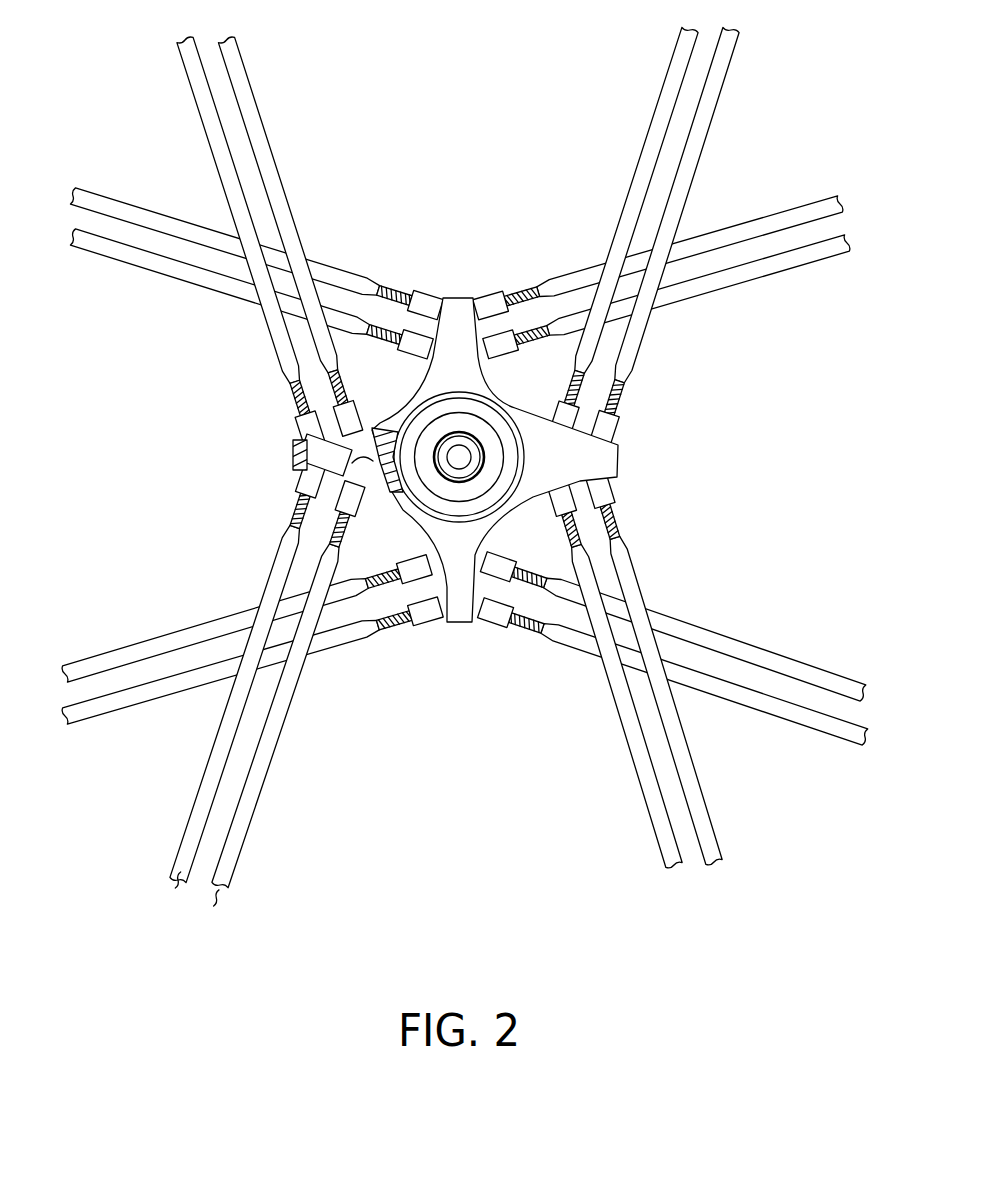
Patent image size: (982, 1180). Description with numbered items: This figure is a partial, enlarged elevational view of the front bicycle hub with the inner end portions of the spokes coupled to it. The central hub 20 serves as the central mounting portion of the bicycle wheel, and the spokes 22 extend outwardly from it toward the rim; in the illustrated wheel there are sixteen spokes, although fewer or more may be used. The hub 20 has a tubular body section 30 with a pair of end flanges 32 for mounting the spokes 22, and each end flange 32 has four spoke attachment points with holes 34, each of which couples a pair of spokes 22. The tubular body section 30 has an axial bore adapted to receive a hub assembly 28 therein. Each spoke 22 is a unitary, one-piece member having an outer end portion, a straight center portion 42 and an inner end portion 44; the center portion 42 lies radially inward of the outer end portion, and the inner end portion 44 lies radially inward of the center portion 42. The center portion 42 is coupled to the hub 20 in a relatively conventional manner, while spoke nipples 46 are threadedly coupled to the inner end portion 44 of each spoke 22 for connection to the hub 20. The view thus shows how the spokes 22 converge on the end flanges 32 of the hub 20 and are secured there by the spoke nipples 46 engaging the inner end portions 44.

The central hub 20 is at (483, 467).
The spokes 22 is at (465, 487).
The hub assembly 28 is at (465, 424).
The tubular body section 30 is at (450, 470).
The end flanges 32 is at (620, 458).
The holes 34 is at (303, 438).
The center portion 42 is at (207, 878).
The inner end portion 44 is at (347, 502).
The spoke nipples 46 is at (297, 498).